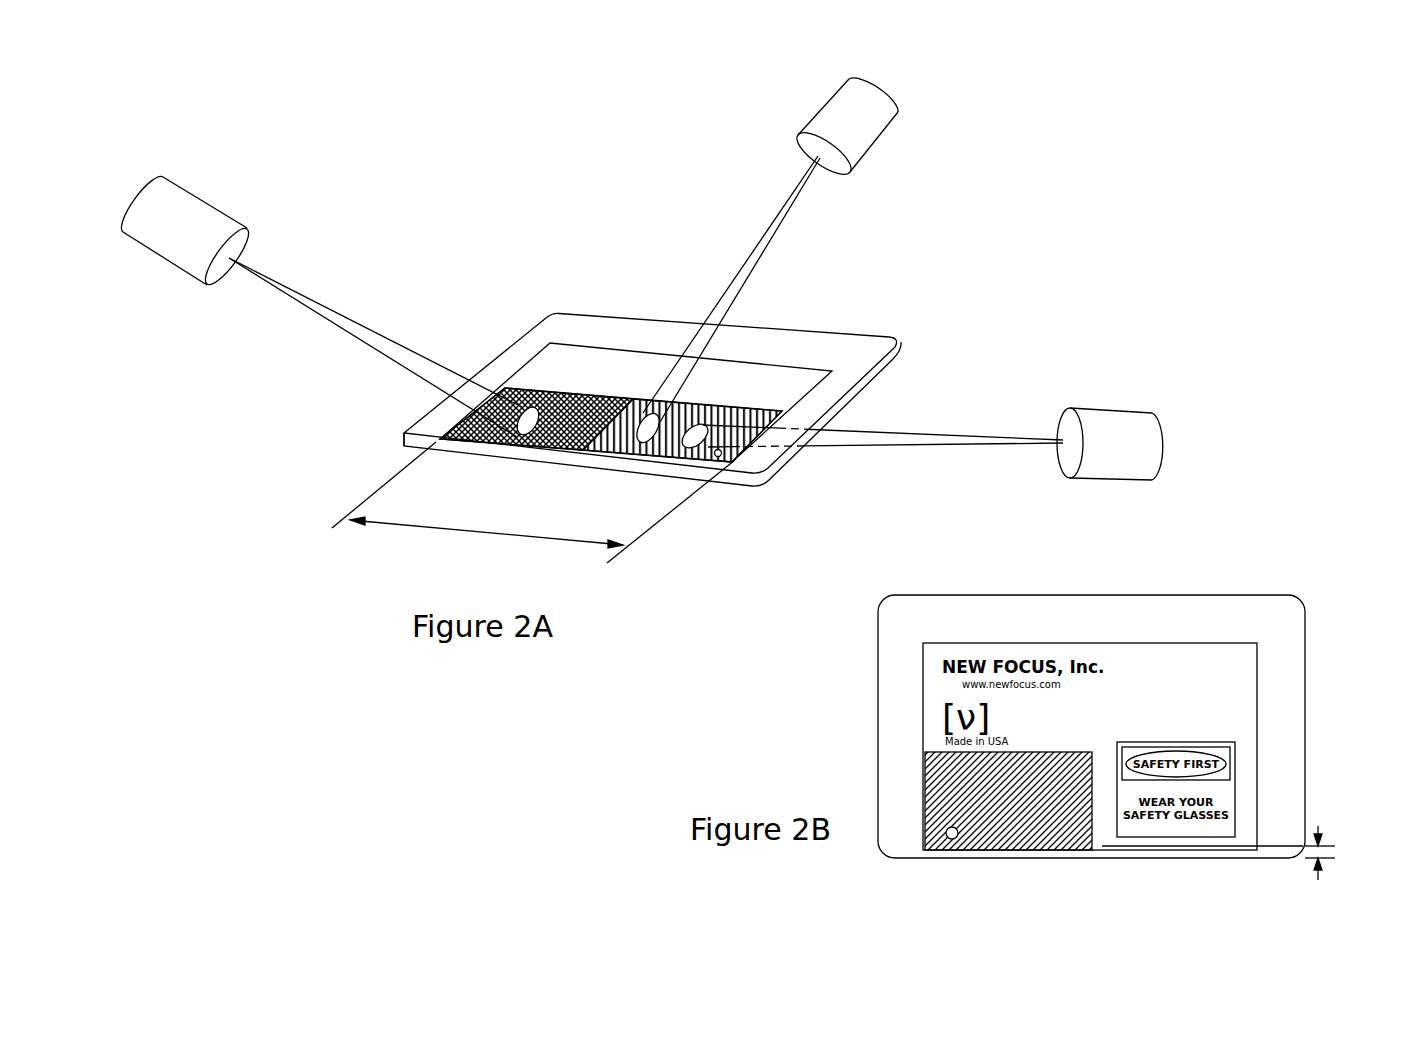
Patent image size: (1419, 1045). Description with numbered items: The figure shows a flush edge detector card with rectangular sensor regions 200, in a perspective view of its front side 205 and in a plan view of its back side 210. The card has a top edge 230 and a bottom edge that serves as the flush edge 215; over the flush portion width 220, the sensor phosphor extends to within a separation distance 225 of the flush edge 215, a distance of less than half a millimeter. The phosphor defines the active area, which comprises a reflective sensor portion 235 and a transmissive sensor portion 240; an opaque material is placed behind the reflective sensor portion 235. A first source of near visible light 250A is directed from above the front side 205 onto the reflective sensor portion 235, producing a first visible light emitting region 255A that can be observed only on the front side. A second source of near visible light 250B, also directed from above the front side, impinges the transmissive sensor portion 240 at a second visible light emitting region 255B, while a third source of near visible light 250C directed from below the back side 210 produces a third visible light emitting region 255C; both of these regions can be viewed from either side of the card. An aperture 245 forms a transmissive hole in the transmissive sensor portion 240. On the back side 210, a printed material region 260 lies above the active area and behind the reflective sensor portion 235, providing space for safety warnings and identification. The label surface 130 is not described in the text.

In FIG. 2A, the label surface 130 is at (507, 360).
In FIG. 2B, the label surface 130 is at (988, 610).
In FIG. 2A, the flush edge detector card with rectangular sensor regions 200 is at (645, 158).
In FIG. 2A, the front side 205 is at (437, 420).
In FIG. 2A, the back side 210 is at (790, 457).
In FIG. 2A, the flush edge 215 is at (563, 467).
In FIG. 2B, the flush edge 215 is at (1165, 859).
In FIG. 2A, the flush portion width 220 is at (463, 532).
In FIG. 2B, the flush portion width 220 is at (1118, 588).
In FIG. 2A, the separation distance 225 is at (507, 448).
In FIG. 2B, the separation distance 225 is at (1322, 852).
In FIG. 2A, the top edge 230 is at (787, 325).
In FIG. 2B, the top edge 230 is at (1205, 592).
In FIG. 2A, the reflective sensor portion 235 is at (453, 453).
In FIG. 2A, the transmissive sensor portion 240 is at (617, 463).
In FIG. 2B, the transmissive sensor portion 240 is at (1045, 852).
In FIG. 2A, the aperture 245 is at (728, 460).
In FIG. 2B, the aperture 245 is at (955, 840).
In FIG. 2A, the first source of near visible light 250A is at (303, 306).
In FIG. 2A, the second source of near visible light 250B is at (786, 240).
In FIG. 2A, the third source of near visible light 250C is at (966, 444).
In FIG. 2A, the first visible light emitting region 255A is at (528, 406).
In FIG. 2A, the second visible light emitting region 255B is at (648, 412).
In FIG. 2A, the third visible light emitting region 255C is at (697, 450).
In FIG. 2B, the printed material region 260 is at (1243, 710).